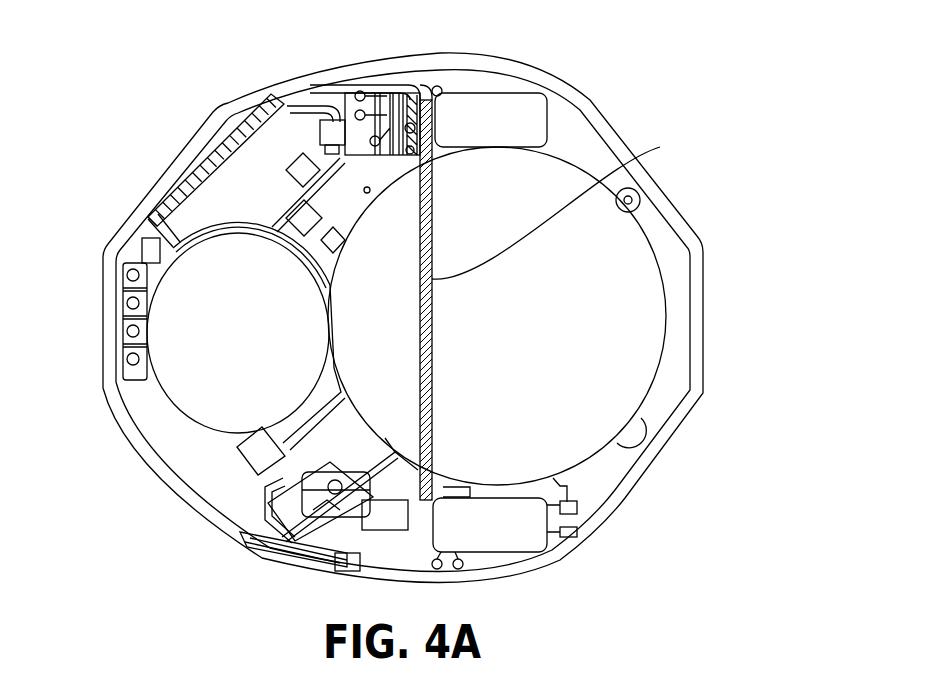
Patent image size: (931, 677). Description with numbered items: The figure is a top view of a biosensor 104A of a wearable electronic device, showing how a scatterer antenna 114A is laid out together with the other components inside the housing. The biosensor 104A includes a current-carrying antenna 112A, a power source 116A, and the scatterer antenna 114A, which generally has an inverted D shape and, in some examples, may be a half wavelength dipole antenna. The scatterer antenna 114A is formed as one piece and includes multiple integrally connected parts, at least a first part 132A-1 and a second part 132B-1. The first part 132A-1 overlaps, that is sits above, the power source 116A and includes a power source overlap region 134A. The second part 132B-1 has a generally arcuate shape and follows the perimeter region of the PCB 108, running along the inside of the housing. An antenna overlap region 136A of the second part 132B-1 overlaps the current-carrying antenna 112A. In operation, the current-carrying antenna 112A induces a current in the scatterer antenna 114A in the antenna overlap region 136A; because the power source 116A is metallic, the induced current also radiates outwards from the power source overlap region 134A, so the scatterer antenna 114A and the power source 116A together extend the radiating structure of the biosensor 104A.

The biosensor 104A is at (657, 68).
The housing body 108 is at (158, 420).
The current-carrying antenna 112A is at (290, 106).
The scatterer antenna 114A is at (117, 303).
The power source 116A is at (642, 262).
The first part 132A-1 is at (428, 102).
The second part 132B-1 is at (367, 82).
The power source overlap region 134A is at (660, 147).
The antenna overlap region 136A is at (213, 150).